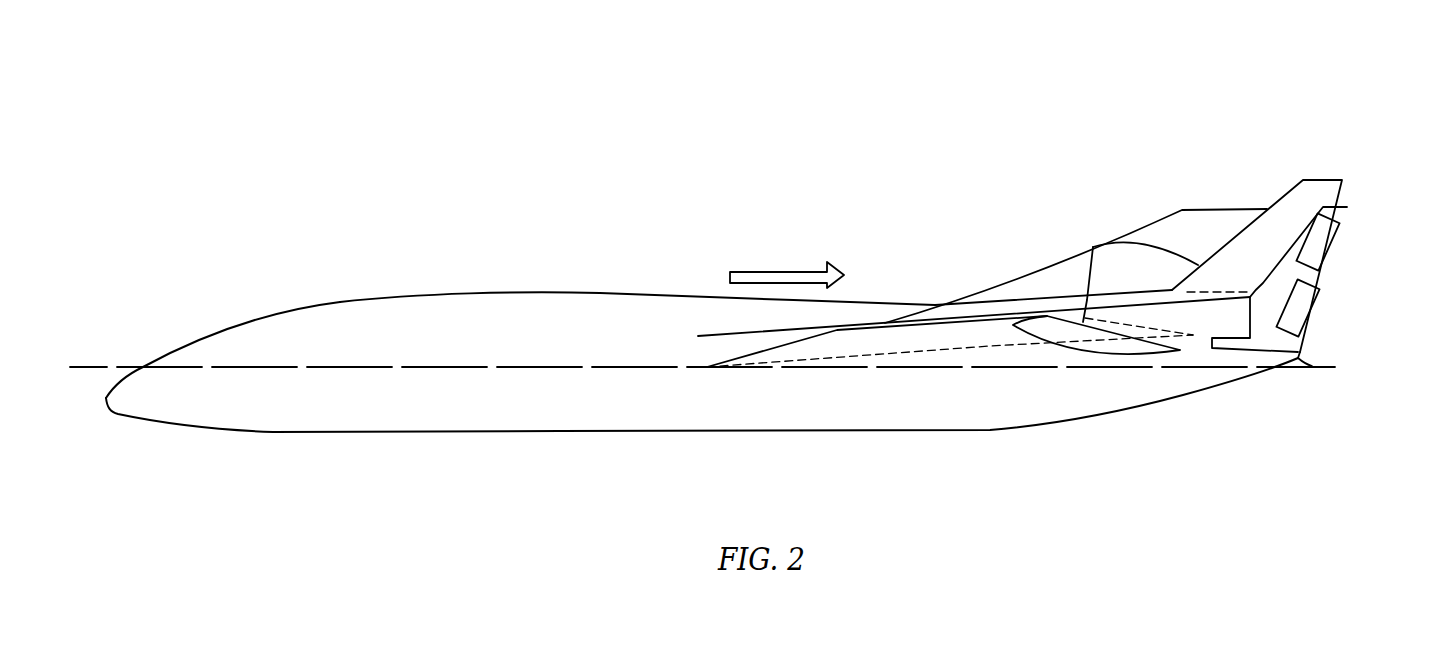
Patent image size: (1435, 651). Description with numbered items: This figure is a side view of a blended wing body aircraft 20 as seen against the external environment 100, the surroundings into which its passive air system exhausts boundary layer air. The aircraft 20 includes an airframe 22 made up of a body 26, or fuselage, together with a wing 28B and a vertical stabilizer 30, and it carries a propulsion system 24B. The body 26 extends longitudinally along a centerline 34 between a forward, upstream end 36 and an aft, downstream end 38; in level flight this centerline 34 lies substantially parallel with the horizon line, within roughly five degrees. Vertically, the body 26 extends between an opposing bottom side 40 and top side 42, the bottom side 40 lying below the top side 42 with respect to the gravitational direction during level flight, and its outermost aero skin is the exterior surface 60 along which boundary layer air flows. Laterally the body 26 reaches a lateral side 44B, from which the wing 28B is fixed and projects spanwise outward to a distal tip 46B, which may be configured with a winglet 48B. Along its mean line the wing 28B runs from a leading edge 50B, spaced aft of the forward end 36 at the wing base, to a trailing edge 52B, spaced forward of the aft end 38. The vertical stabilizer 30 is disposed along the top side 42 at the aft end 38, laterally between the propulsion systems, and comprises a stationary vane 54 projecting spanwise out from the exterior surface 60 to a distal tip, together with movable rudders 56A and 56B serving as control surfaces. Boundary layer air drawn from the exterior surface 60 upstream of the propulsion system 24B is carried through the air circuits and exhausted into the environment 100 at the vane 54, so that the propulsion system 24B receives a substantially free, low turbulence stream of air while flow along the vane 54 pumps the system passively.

The blended wing body aircraft 20 is at (171, 121).
The environment 100 is at (534, 171).
The airframe 22 is at (420, 279).
The body 26 is at (337, 298).
The top side 42 is at (757, 257).
The exterior surface 60 is at (598, 292).
The centerline 34 is at (82, 367).
The forward end 36 is at (105, 402).
The bottom side 40 is at (555, 433).
The lateral side 44B is at (625, 350).
The aft end 38 is at (1312, 366).
The wing 28B is at (935, 302).
The vertical stabilizer 30 is at (1034, 267).
The vane 54 is at (1083, 248).
The propulsion system 24B is at (1142, 242).
The winglet 48B is at (1237, 221).
The rudder 56B is at (1333, 250).
The rudder 56A is at (1317, 313).
The distal tip 46B is at (1193, 292).
The leading edge 50B is at (893, 322).
The trailing edge 52B is at (1043, 327).